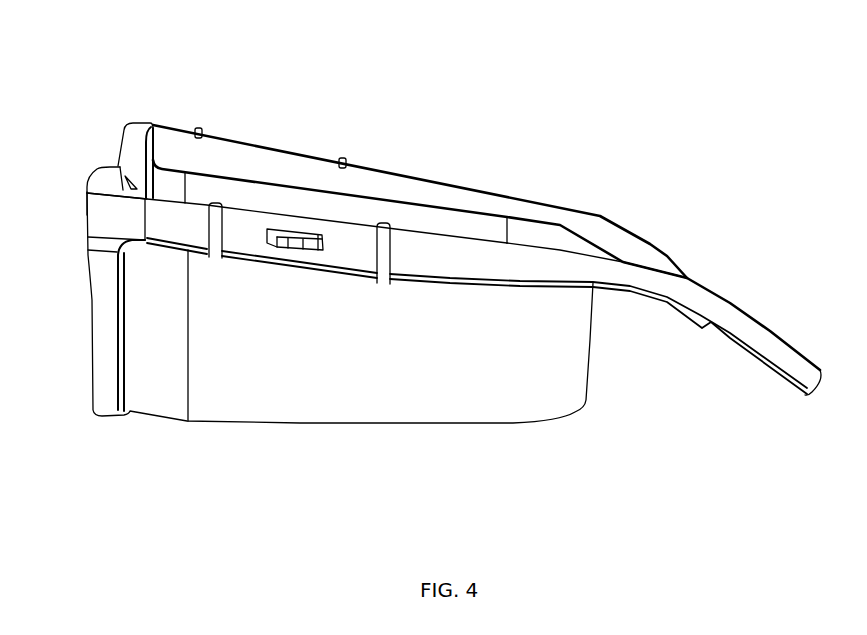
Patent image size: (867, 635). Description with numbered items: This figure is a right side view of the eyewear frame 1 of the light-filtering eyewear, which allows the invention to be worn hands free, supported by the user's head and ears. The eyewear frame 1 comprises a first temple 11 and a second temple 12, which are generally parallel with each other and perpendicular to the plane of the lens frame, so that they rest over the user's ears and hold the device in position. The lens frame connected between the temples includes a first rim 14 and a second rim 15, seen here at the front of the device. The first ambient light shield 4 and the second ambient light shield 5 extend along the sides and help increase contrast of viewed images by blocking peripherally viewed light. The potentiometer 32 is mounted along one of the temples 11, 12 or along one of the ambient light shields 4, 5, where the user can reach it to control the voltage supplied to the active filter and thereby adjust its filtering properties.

The eyewear frame 1 is at (173, 72).
The first ambient light shield 4 is at (255, 193).
The second ambient light shield 5 is at (275, 388).
The first temple 11 is at (433, 190).
The second temple 12 is at (448, 265).
The first rim 14 is at (130, 147).
The second rim 15 is at (105, 183).
The potentiometer 32 is at (307, 250).